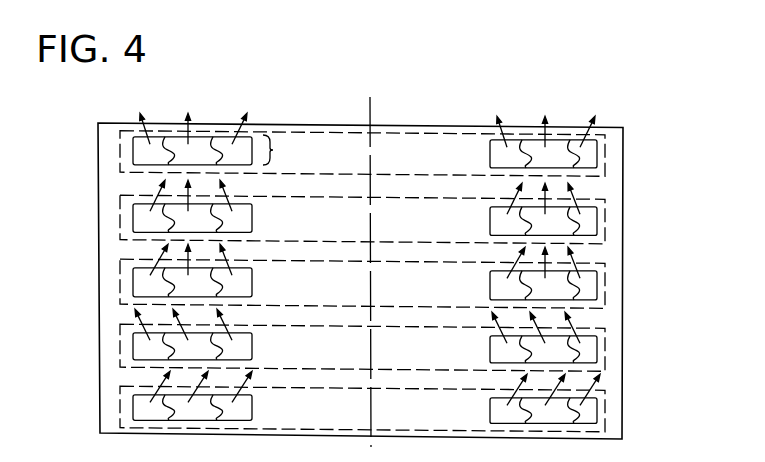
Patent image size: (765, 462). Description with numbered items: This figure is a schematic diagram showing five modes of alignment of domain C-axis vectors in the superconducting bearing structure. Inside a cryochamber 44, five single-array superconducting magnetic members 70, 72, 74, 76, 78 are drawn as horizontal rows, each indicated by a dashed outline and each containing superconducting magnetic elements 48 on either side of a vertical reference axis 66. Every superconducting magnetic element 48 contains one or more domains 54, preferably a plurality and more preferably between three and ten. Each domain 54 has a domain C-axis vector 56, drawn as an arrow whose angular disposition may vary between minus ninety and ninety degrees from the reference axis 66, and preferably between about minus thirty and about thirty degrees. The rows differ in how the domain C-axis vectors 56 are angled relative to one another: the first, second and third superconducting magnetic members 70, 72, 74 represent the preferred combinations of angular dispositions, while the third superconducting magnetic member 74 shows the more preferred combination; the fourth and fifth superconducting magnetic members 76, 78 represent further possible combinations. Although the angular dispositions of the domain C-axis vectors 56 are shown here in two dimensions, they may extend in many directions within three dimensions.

The cryochamber 44 is at (623, 143).
The superconducting magnetic element 48 is at (273, 150).
The domain 54 is at (197, 142).
The domain C-axis vector 56 is at (143, 113).
The reference axis 66 is at (371, 115).
The first superconducting magnetic member 70 is at (318, 121).
The second superconducting magnetic member 72 is at (120, 221).
The third superconducting magnetic member 74 is at (120, 283).
The fourth superconducting magnetic member 76 is at (120, 347).
The fifth superconducting magnetic member 78 is at (120, 405).